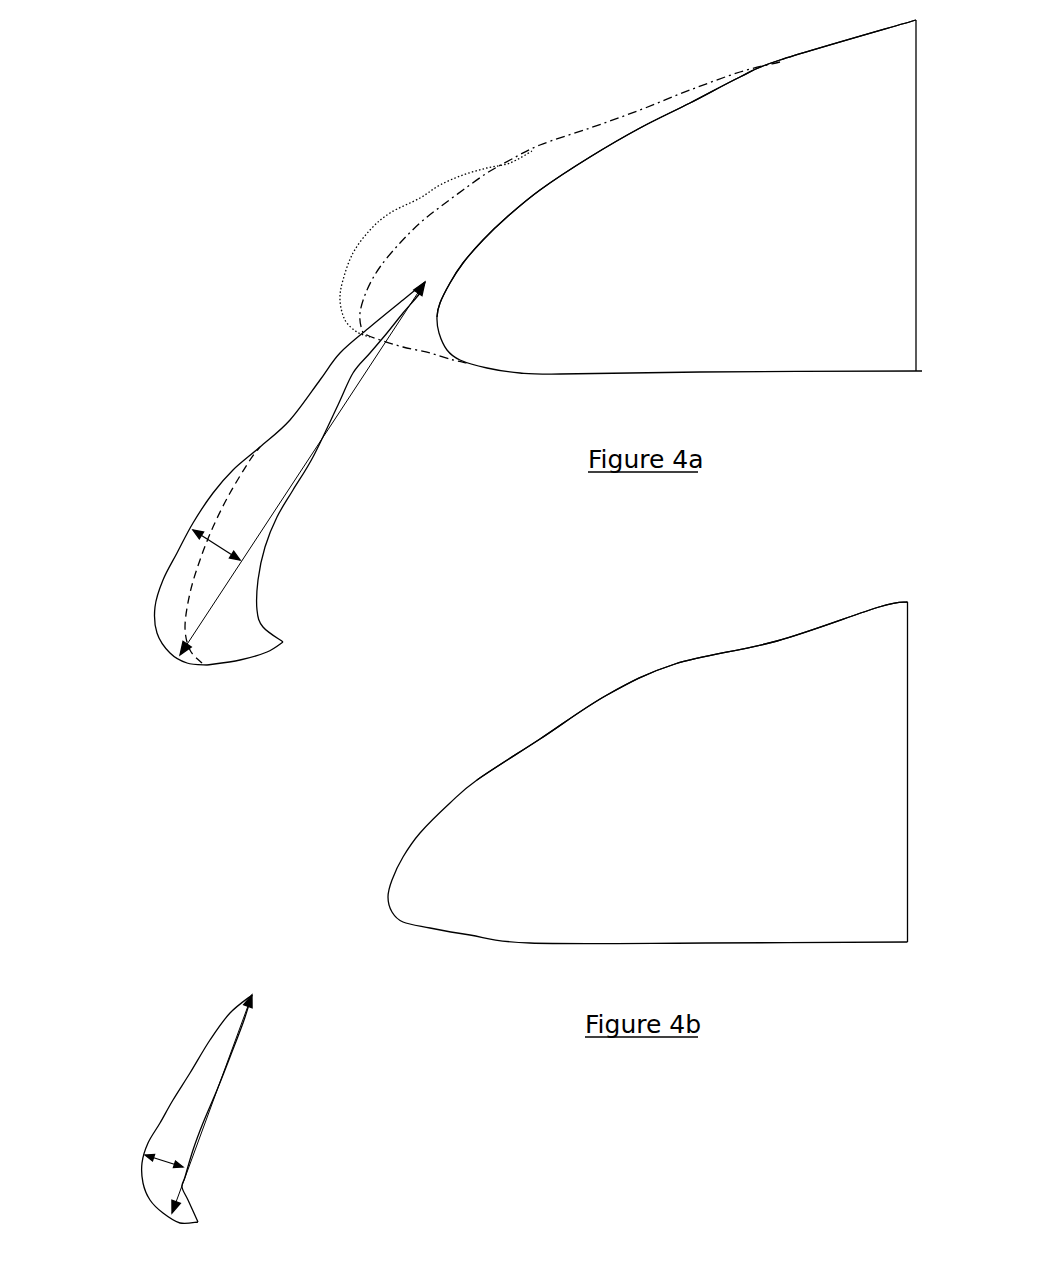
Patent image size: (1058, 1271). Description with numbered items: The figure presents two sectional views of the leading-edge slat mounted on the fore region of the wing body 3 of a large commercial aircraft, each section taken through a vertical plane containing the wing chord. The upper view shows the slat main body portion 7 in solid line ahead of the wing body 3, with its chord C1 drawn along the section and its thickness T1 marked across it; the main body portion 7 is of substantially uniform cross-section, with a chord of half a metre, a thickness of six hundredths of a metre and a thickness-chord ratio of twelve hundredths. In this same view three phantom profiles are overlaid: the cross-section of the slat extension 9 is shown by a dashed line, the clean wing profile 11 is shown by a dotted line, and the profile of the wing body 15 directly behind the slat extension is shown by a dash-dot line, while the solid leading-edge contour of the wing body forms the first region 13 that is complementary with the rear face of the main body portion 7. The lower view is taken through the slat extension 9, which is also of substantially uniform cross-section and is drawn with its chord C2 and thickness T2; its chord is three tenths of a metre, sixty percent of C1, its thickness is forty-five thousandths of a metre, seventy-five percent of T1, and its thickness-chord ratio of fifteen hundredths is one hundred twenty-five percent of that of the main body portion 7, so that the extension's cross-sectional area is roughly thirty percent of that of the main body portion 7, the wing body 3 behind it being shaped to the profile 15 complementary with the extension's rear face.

In FIG. 4A, the wing body 3 is at (742, 177).
In FIG. 4B, the wing body 3 is at (708, 806).
In FIG. 4A, the main body portion 7 is at (250, 490).
In FIG. 4A, the slat extension 9 is at (178, 585).
In FIG. 4B, the slat extension 9 is at (193, 1098).
In FIG. 4A, the clean wing profile 11 is at (390, 213).
In FIG. 4A, the first region 13 is at (534, 192).
In FIG. 4A, the profile of the wing body 15 is at (613, 113).
In FIG. 4B, the profile of the wing body 15 is at (655, 673).
In FIG. 4A, the chord C1 is at (302, 468).
In FIG. 4A, the thickness T1 is at (198, 530).
In FIG. 4B, the chord C2 is at (212, 1104).
In FIG. 4B, the thickness T2 is at (145, 1148).